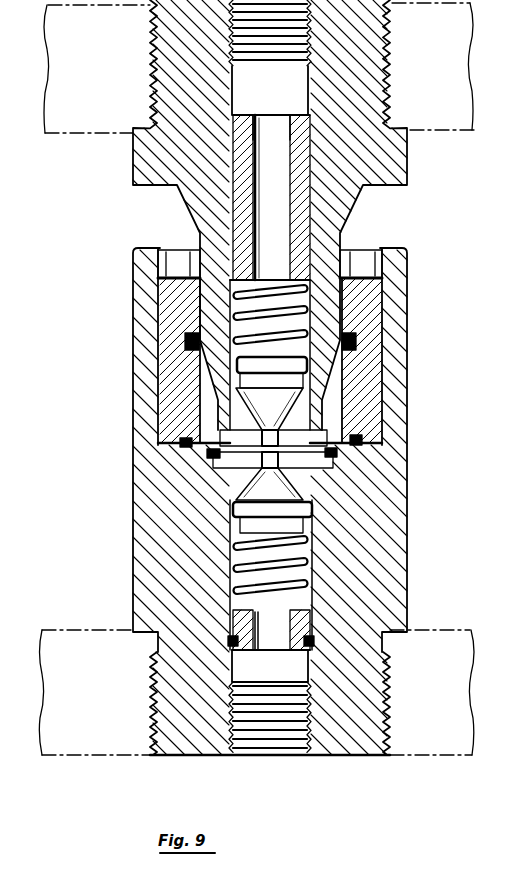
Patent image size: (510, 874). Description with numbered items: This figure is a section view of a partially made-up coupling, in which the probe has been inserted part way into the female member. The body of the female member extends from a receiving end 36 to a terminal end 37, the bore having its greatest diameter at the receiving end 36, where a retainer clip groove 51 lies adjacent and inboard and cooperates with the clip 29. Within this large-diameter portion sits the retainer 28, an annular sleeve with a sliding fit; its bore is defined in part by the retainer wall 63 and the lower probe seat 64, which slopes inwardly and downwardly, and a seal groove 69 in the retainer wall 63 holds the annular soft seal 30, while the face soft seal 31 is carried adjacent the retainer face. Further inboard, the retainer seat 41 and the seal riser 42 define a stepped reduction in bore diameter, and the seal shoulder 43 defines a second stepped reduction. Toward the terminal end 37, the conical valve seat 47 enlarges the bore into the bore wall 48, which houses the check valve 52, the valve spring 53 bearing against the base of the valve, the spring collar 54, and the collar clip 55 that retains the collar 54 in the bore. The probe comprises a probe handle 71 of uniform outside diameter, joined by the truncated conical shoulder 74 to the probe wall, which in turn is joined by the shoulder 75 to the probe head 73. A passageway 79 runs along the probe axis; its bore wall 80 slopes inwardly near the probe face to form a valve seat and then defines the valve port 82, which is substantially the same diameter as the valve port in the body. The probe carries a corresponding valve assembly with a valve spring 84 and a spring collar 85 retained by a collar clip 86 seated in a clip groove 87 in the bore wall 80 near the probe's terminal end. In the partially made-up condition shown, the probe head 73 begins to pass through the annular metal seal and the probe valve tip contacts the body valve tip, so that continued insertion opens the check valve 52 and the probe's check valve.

The retainer 28 is at (200, 424).
The clip 29 is at (392, 292).
The annular soft seal 30 is at (354, 341).
The face soft seal 31 is at (316, 450).
The receiving end 36 is at (148, 249).
The terminal end 37 is at (333, 757).
The retainer seat 41 is at (226, 450).
The seal riser 42 is at (334, 464).
The seal shoulder 43 is at (332, 471).
The valve seat 47 is at (312, 497).
The bore wall 48 is at (237, 582).
The retainer clip groove 51 is at (385, 279).
The check valve 52 is at (240, 505).
The valve spring 53 is at (312, 575).
The spring collar 54 is at (235, 653).
The collar clip 55 is at (230, 641).
The retainer wall 63 is at (163, 408).
The lower probe seat 64 is at (332, 412).
The seal groove 69 is at (306, 362).
The probe handle 71 is at (150, 78).
The probe head 73 is at (205, 440).
The shoulder 74 is at (186, 201).
The shoulder 75 is at (215, 380).
The passageway 79 is at (306, 323).
The bore wall 80 is at (212, 300).
The valve port 82 is at (354, 422).
The valve spring 84 is at (186, 341).
The spring collar 85 is at (345, 239).
The collar clip 86 is at (306, 124).
The clip groove 87 is at (338, 143).